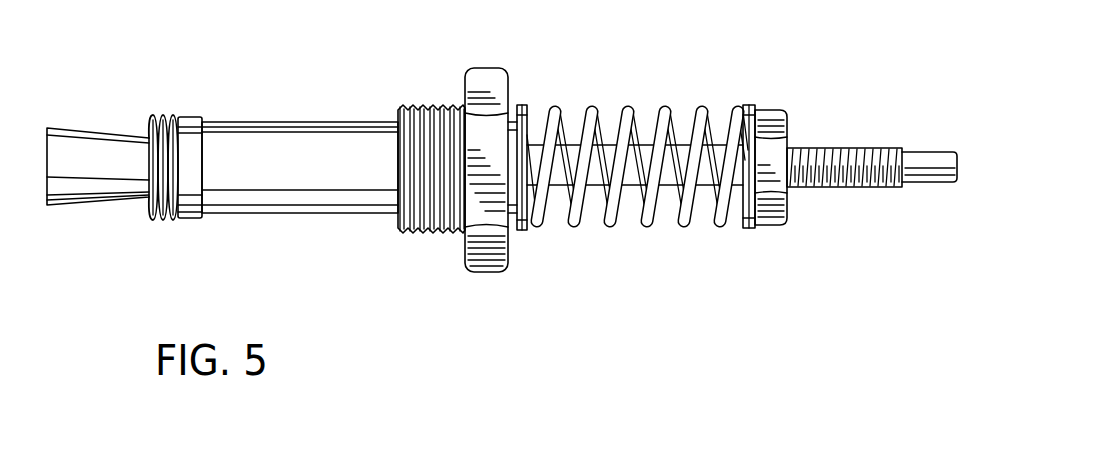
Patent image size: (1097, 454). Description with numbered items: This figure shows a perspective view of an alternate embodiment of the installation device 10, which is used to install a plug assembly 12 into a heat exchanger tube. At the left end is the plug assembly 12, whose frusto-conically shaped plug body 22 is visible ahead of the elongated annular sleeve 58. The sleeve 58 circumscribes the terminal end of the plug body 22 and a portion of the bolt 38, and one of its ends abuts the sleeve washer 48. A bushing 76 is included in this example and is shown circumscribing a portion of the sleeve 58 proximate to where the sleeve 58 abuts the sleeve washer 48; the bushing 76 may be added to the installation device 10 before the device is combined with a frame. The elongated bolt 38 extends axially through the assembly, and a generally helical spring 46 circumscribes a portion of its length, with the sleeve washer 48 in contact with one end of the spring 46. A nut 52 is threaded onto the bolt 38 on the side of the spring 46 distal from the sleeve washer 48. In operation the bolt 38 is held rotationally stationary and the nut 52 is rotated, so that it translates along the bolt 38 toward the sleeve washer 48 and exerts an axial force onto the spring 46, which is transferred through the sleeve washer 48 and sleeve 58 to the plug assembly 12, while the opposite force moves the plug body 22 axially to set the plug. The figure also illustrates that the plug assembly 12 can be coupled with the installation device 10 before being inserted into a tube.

The installation device 10 is at (650, 83).
The plug assembly 12 is at (96, 97).
The plug body 22 is at (93, 185).
The bolt 38 is at (872, 148).
The spring 46 is at (610, 226).
The sleeve washer 48 is at (520, 105).
The nut 52 is at (770, 213).
The sleeve 58 is at (300, 122).
The bushing 76 is at (440, 245).